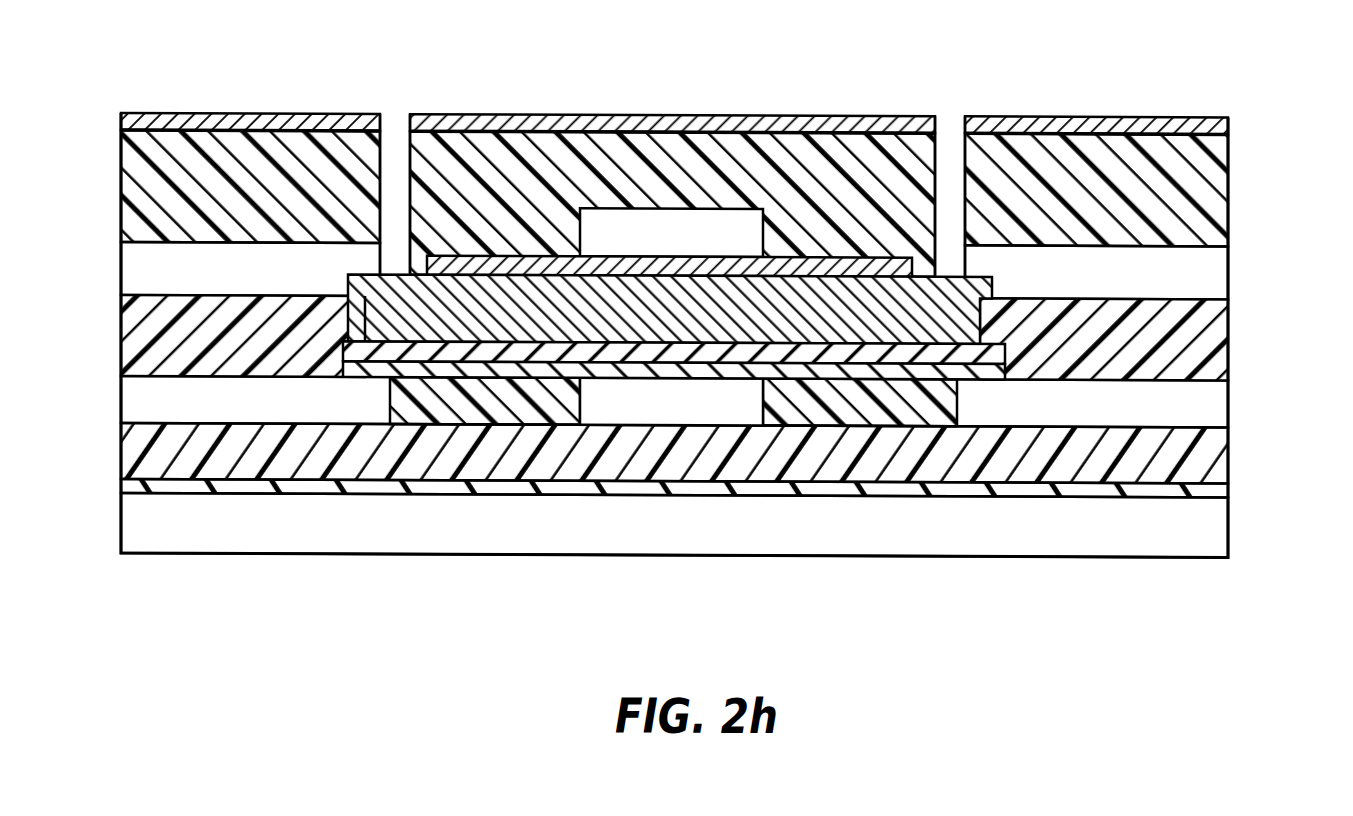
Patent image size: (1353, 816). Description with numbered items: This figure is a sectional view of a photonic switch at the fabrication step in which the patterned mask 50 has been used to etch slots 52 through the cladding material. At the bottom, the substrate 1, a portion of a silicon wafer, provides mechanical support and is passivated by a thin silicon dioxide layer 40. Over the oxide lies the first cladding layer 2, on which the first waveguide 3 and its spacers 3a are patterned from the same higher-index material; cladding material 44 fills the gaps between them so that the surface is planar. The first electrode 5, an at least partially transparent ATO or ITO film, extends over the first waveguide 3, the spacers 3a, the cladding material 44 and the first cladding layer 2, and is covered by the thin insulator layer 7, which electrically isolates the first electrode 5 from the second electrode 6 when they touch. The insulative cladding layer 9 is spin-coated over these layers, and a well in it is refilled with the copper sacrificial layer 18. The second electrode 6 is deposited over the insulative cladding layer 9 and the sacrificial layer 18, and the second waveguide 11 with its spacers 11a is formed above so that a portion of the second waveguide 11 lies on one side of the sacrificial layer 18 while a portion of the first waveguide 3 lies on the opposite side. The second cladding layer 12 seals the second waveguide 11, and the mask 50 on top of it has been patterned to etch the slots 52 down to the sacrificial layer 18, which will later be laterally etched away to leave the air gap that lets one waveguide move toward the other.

The substrate 1 is at (1202, 513).
The first cladding layer 2 is at (1215, 453).
The first waveguide 3 is at (664, 408).
The spacers 3a is at (168, 401).
The first electrode 5 is at (343, 369).
The second electrode 6 is at (845, 262).
The thin insulator layer 7 is at (1010, 351).
The insulative cladding layer 9 is at (155, 322).
The second waveguide 11 is at (657, 238).
The spacers 11a is at (148, 261).
The second cladding layer 12 is at (150, 186).
The sacrificial layer 18 is at (658, 320).
The silicon dioxide layer 40 is at (1212, 483).
The cladding material 44 is at (476, 409).
The mask 50 is at (120, 122).
The slots 52 is at (392, 146).